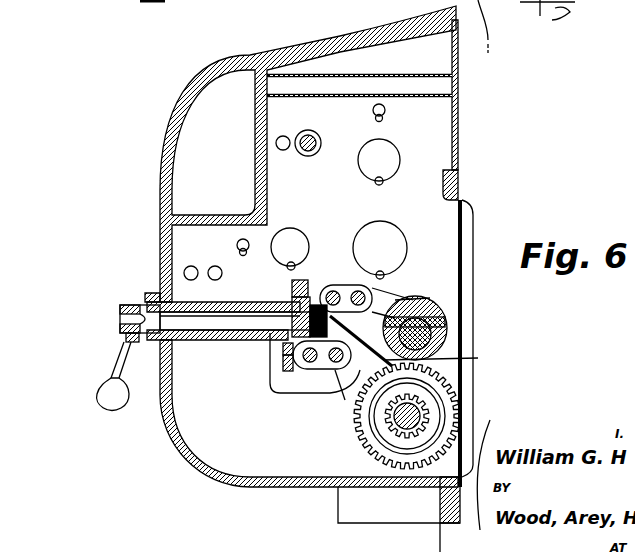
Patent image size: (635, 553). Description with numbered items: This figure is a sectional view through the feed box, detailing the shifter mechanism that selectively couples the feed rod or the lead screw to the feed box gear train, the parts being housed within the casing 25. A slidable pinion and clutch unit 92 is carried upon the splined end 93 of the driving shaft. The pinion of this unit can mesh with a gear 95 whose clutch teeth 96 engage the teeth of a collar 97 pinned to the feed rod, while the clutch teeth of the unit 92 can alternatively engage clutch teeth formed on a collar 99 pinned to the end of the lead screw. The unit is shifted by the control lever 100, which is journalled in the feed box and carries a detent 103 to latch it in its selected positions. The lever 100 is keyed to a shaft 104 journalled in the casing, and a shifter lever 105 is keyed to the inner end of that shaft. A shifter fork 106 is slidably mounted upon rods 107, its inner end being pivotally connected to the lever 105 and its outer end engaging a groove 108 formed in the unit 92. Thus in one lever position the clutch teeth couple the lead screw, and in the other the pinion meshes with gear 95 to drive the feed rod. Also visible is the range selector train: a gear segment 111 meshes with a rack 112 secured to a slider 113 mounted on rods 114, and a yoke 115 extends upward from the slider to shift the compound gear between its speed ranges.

The housing 25 is at (163, 192).
The slidable pinion and clutch unit 92 is at (440, 357).
The splined end 93 is at (362, 366).
The gear 95 is at (362, 440).
The clutch teeth 96 is at (395, 416).
The collar 97 is at (388, 422).
The collar 99 is at (447, 329).
The control lever 100 is at (98, 392).
The detent 103 is at (126, 337).
The shaft 104 is at (233, 318).
The shifter lever 105 is at (310, 280).
The shifter fork 106 is at (388, 302).
The rods 107 is at (355, 290).
The groove 108 is at (416, 302).
The gear segment 111 is at (283, 349).
The rack 112 is at (283, 362).
The slider 113 is at (300, 370).
The rods 114 is at (328, 370).
The yoke 115 is at (340, 398).